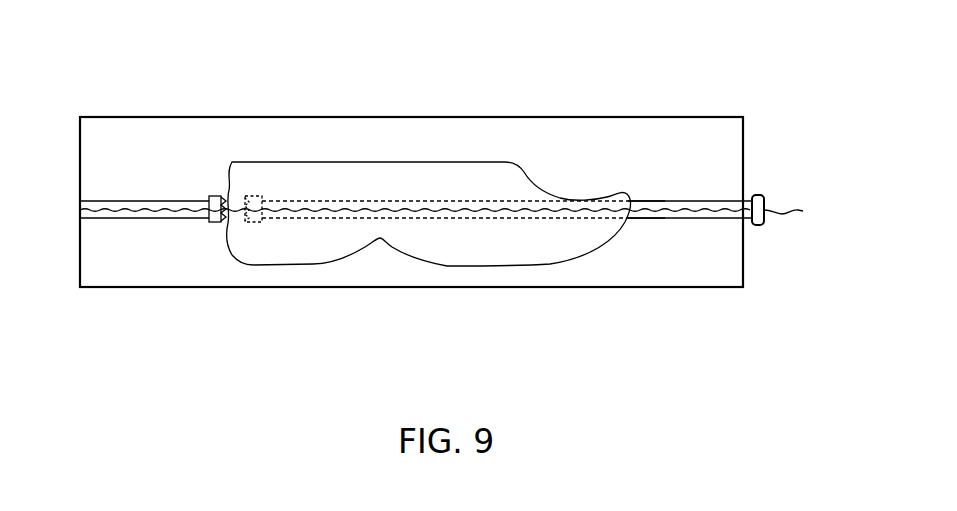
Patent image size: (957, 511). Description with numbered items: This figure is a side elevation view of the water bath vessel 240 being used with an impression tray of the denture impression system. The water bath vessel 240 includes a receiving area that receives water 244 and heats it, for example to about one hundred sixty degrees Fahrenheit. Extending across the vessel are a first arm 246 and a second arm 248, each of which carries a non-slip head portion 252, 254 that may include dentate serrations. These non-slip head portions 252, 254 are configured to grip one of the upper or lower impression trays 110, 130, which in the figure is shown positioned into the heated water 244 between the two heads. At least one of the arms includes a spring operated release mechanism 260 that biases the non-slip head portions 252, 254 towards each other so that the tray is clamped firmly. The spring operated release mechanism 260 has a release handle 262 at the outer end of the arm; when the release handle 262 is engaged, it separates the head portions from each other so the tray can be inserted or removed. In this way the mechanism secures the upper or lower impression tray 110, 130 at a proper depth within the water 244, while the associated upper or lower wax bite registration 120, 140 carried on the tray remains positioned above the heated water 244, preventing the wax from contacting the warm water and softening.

The water bath vessel 240 is at (643, 117).
The water 244 is at (709, 208).
The first arm 246 is at (713, 222).
The second arm 248 is at (142, 198).
The non-slip head portion 252 is at (255, 223).
The non-slip head portion 254 is at (211, 223).
The spring operated release mechanism 260 is at (633, 222).
The release handle 262 is at (797, 210).
The upper wax bite registration 120 is at (411, 157).
The lower wax bite registration 140 is at (243, 177).
The upper impression tray 110 is at (413, 294).
The lower impression tray 130 is at (251, 248).